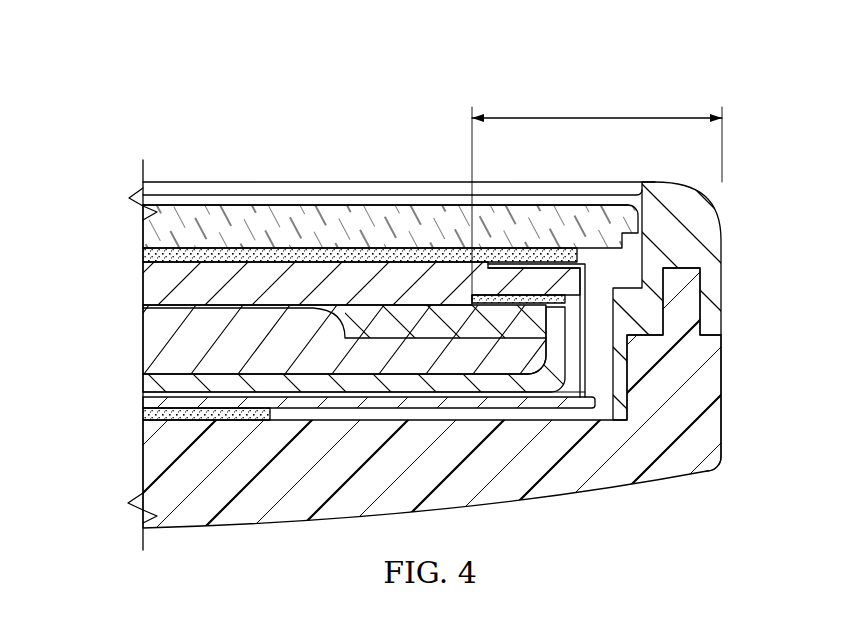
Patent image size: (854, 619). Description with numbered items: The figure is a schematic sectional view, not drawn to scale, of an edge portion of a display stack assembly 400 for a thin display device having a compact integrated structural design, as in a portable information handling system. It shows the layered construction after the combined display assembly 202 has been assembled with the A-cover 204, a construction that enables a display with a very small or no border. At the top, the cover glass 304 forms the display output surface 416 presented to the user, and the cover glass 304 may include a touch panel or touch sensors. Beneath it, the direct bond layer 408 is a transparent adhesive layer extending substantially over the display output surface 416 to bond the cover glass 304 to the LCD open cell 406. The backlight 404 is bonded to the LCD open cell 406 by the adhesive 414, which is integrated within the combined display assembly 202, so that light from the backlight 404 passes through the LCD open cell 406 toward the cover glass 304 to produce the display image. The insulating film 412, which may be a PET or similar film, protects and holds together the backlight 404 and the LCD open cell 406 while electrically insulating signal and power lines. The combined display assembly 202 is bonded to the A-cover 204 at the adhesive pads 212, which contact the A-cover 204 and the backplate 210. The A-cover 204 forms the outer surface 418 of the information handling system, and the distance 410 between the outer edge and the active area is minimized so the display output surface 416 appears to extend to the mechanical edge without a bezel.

The display stack assembly 400 is at (332, 138).
The combined display assembly 202 is at (62, 183).
The cover glass 304 is at (192, 213).
The display output surface 416 is at (295, 193).
The direct bond layer 408 is at (141, 258).
The LCD open cell 406 is at (135, 263).
The backlight 404 is at (135, 307).
The backplate 210 is at (150, 403).
The adhesive pads 212 is at (143, 410).
The A-cover 204 is at (188, 520).
The distance 410 is at (597, 118).
The insulating film 412 is at (587, 277).
The adhesive 414 is at (532, 280).
The outer surface 418 is at (539, 522).